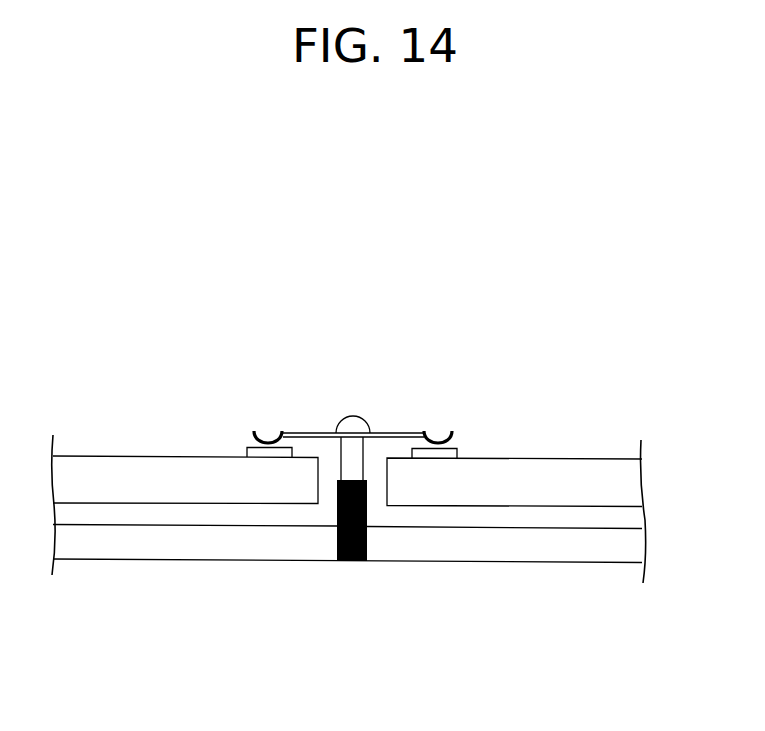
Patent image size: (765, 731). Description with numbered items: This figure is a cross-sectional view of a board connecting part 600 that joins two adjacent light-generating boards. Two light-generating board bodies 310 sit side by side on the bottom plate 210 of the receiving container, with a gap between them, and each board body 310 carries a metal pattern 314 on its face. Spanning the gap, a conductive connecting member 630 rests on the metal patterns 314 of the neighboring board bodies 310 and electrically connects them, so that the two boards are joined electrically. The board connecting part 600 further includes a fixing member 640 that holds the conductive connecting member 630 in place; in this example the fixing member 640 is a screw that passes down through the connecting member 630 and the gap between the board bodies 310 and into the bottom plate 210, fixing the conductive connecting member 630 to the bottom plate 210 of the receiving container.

The bottom plate 210 is at (442, 548).
The light-generating board body 310 is at (149, 470).
The metal pattern 314 is at (461, 452).
The board connecting part 600 is at (372, 350).
The conductive connecting member 630 is at (310, 432).
The fixing member 640 is at (353, 422).